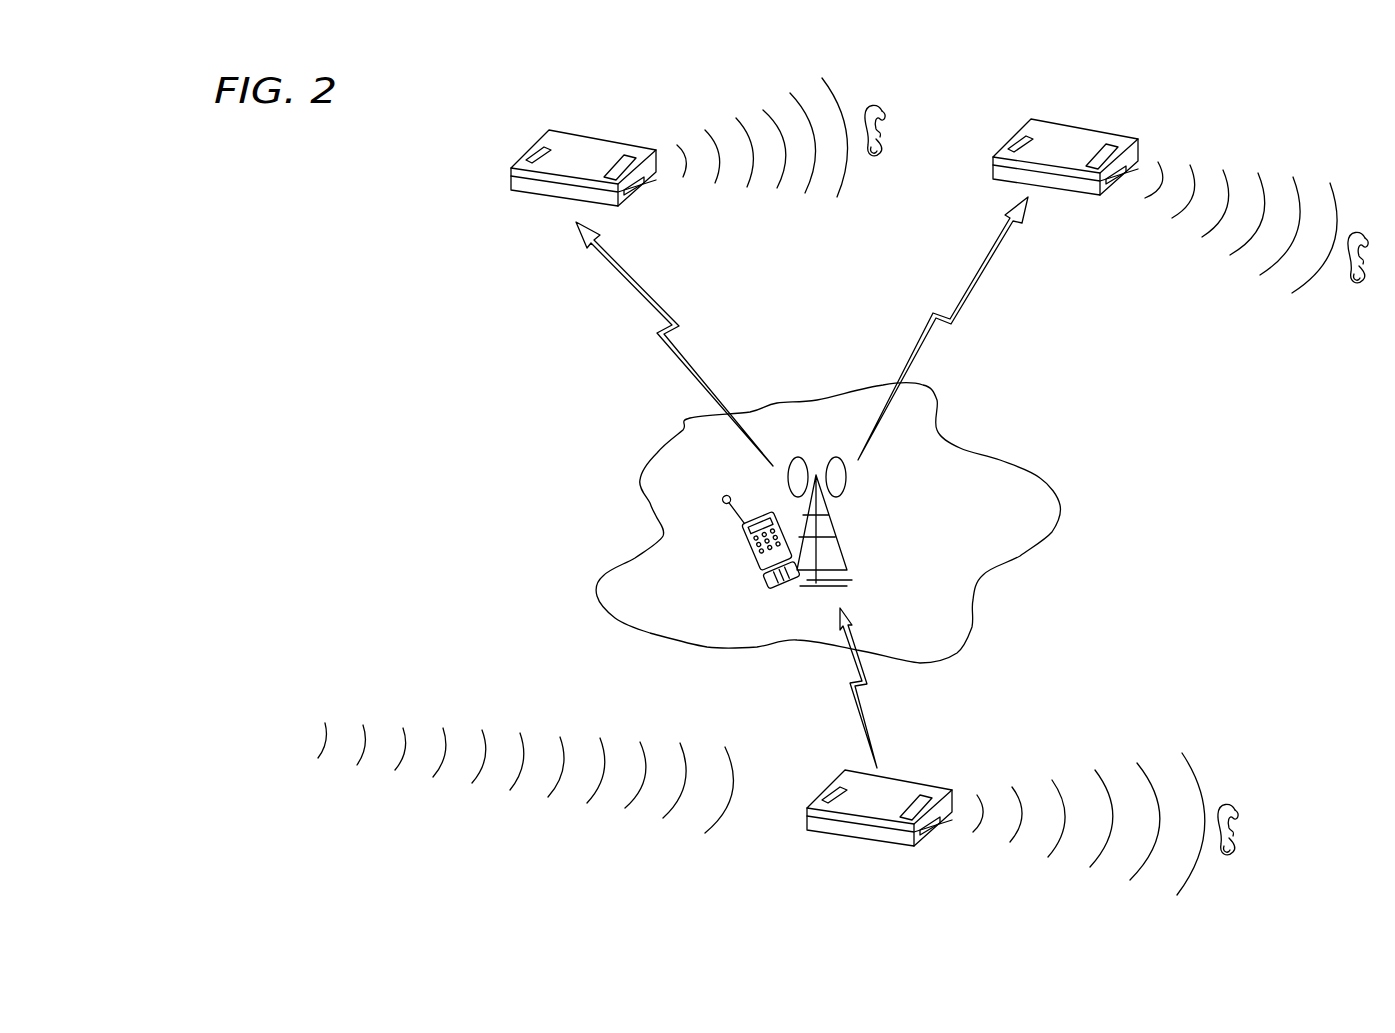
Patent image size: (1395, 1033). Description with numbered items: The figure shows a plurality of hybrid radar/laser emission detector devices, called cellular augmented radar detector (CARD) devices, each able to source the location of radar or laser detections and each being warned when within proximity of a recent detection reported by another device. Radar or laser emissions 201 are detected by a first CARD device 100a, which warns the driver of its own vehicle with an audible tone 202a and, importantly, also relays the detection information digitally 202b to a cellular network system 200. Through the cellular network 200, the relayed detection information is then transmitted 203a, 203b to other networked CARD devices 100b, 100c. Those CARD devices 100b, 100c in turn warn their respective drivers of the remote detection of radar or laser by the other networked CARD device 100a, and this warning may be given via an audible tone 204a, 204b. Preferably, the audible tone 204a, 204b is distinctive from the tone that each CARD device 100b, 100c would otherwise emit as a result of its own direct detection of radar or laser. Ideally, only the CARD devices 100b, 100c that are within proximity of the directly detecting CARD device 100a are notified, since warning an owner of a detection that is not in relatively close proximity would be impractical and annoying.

The CARD device 100a is at (875, 855).
The CARD device 100b is at (590, 118).
The CARD device 100c is at (1104, 113).
The cellular network system 200 is at (975, 610).
The radar or laser emissions 201 is at (515, 814).
The audible tone 202a is at (1028, 866).
The digital relay of detection information 202b is at (874, 727).
The transmission to other CARD device 203a is at (675, 309).
The transmission to other CARD device 203b is at (930, 316).
The audible tone 204a is at (788, 213).
The audible tone 204b is at (1200, 263).